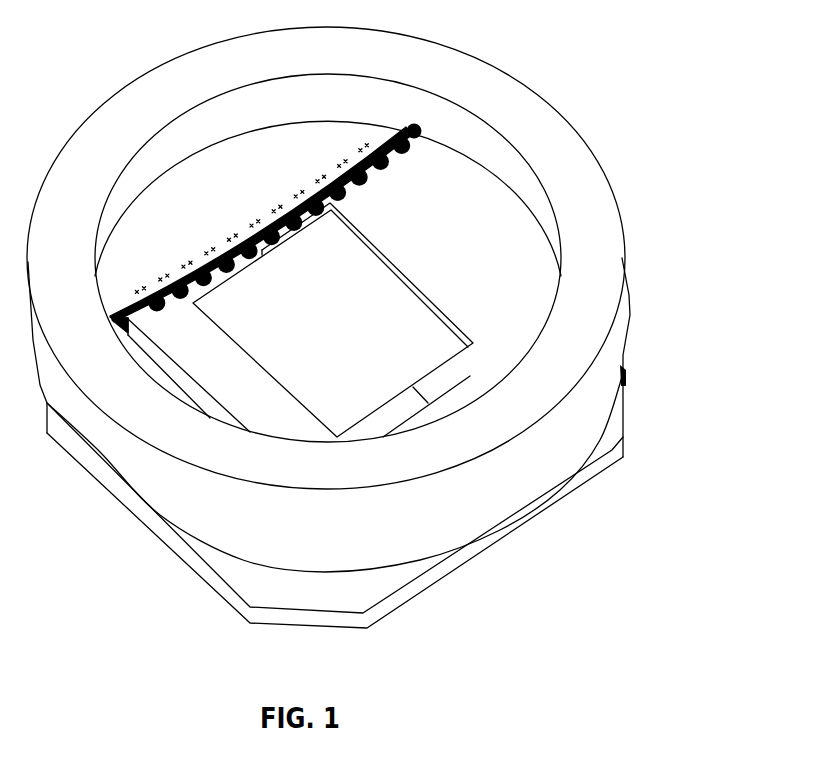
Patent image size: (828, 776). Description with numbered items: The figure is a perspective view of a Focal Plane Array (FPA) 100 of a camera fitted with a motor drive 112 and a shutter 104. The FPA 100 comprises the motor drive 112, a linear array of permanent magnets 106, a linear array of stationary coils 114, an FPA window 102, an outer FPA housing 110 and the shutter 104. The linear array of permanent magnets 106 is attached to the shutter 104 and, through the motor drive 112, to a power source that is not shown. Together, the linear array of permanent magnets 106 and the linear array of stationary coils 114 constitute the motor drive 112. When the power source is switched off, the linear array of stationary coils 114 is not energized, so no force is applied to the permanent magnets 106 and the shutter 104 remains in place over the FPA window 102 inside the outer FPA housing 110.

The Focal Plane Array (FPA) 100 is at (616, 80).
The FPA window 102 is at (403, 311).
The shutter 104 is at (524, 230).
The linear array of permanent magnets 106 is at (375, 186).
The outer FPA housing 110 is at (614, 343).
The motor drive 112 is at (215, 226).
The linear array of stationary coils 114 is at (224, 284).